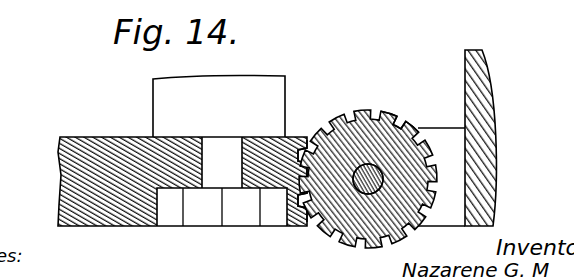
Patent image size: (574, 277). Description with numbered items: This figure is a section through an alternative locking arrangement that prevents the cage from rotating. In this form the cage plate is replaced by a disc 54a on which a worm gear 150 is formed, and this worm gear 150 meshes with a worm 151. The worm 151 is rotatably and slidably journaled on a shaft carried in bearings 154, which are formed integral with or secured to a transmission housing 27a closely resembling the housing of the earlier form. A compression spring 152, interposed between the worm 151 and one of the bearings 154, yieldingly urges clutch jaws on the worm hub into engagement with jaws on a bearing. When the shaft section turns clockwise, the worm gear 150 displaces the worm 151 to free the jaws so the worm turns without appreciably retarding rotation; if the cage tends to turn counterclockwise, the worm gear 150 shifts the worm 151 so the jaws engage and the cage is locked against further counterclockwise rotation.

The disc 54a is at (98, 143).
The worm gear 150 is at (307, 138).
The worm 151 is at (372, 99).
The compression spring 152 is at (402, 109).
The bearings 154 is at (442, 120).
The transmission housing 27a is at (464, 72).